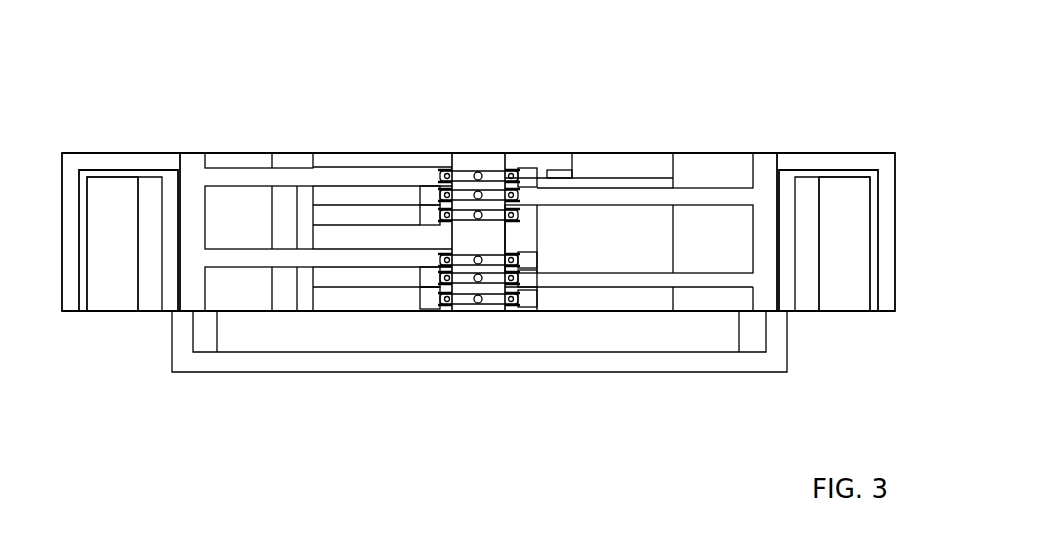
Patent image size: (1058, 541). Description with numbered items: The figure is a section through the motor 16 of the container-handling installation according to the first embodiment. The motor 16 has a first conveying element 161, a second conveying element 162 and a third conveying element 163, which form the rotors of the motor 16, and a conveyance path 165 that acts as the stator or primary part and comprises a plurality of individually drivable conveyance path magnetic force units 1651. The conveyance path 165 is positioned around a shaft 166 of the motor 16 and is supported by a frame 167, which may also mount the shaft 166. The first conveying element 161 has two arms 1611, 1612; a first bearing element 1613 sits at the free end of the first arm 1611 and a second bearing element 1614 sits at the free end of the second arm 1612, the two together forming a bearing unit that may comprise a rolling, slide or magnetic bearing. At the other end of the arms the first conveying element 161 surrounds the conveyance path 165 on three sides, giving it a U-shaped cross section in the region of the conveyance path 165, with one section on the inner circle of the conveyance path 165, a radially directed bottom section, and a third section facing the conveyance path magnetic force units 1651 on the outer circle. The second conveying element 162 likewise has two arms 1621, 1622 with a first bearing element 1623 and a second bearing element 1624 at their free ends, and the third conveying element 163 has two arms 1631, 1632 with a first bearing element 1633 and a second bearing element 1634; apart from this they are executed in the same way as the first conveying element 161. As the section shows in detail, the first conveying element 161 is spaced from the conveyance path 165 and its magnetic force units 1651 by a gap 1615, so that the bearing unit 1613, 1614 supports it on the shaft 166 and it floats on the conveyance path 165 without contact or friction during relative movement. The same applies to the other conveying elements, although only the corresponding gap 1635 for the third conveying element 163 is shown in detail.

The motor 16 is at (910, 55).
The first conveying element 161 is at (88, 158).
The first arm 1611 is at (243, 177).
The second arm 1612 is at (240, 254).
The first bearing element 1613 is at (495, 176).
The second bearing element 1614 is at (505, 258).
The gap 1615 is at (158, 170).
The second conveying element 162 is at (305, 160).
The first arm 1621 is at (403, 217).
The second arm 1622 is at (350, 296).
The first bearing element 1623 is at (502, 216).
The second bearing element 1624 is at (493, 300).
The third conveying element 163 is at (870, 160).
The first arm 1631 is at (712, 192).
The second arm 1632 is at (695, 282).
The first bearing element 1633 is at (502, 195).
The second bearing element 1634 is at (458, 284).
The gap 1635 is at (801, 170).
The conveyance path 165 is at (147, 292).
The conveyance path magnetic force unit 1651 is at (103, 292).
The shaft 166 is at (478, 160).
The frame 167 is at (597, 374).